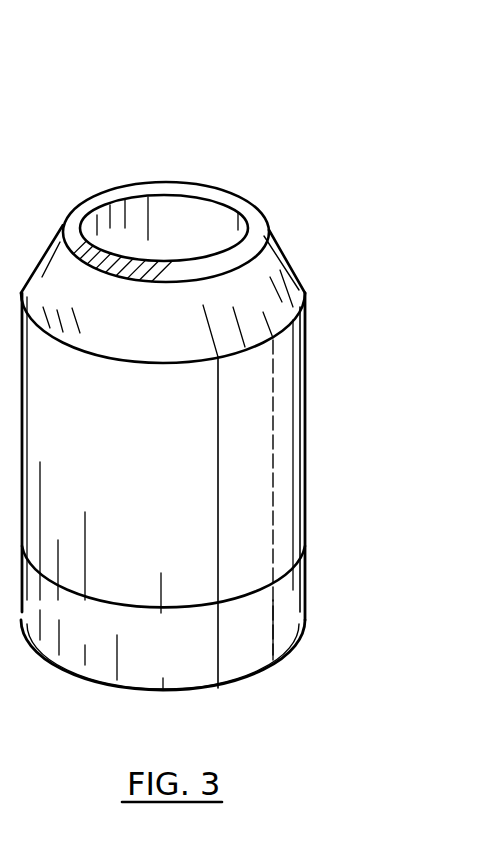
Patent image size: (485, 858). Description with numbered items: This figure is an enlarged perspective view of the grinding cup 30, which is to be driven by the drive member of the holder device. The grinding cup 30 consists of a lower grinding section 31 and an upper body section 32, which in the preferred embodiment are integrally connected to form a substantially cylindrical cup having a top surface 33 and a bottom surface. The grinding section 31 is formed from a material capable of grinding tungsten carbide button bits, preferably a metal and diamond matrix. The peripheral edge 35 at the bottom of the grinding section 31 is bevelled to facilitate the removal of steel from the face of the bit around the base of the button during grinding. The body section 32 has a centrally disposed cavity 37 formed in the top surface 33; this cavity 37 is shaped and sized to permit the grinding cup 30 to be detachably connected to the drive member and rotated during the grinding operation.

The grinding cup 30 is at (223, 354).
The lower grinding section 31 is at (283, 590).
The upper body section 32 is at (307, 383).
The top surface 33 is at (217, 193).
The peripheral edge 35 is at (207, 684).
The cavity 37 is at (167, 207).